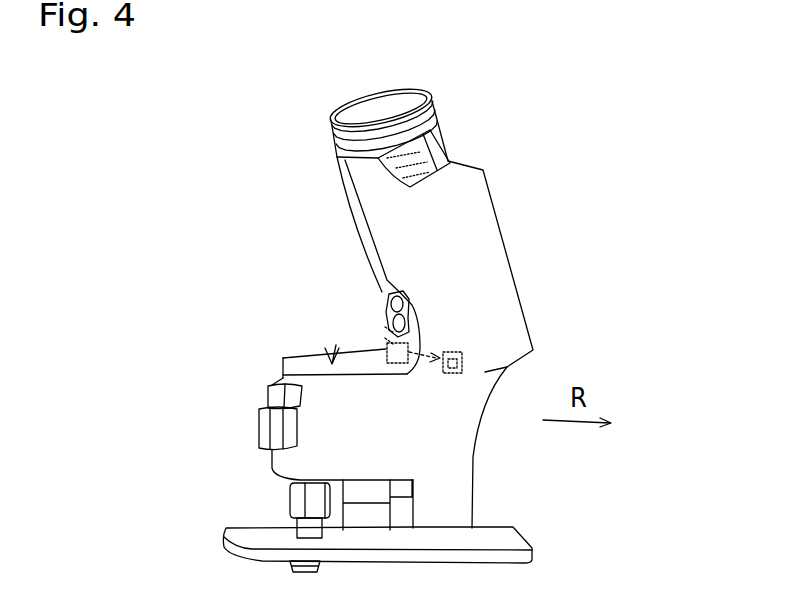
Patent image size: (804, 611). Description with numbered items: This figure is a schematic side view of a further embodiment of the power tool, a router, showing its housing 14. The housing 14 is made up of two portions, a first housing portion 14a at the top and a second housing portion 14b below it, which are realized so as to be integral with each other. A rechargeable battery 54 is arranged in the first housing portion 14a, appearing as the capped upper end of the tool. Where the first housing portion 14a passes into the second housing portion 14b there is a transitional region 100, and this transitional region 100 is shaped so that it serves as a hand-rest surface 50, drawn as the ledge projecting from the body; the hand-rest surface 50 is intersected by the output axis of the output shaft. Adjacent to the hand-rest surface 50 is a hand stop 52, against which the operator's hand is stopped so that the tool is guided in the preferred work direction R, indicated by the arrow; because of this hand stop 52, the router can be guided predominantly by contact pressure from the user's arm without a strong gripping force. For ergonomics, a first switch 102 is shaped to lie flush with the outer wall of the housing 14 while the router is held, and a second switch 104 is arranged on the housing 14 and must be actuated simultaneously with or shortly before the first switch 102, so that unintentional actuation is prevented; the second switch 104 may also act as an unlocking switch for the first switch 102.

The housing 14 is at (401, 351).
The first housing portion 14a is at (468, 216).
The second housing portion 14b is at (462, 453).
The rechargeable battery 54 is at (363, 103).
The hand-rest surface 50 is at (323, 352).
The hand stop 52 is at (387, 312).
The second switch 104 is at (463, 353).
The transitional region 100 is at (390, 330).
The first switch 102 is at (388, 347).